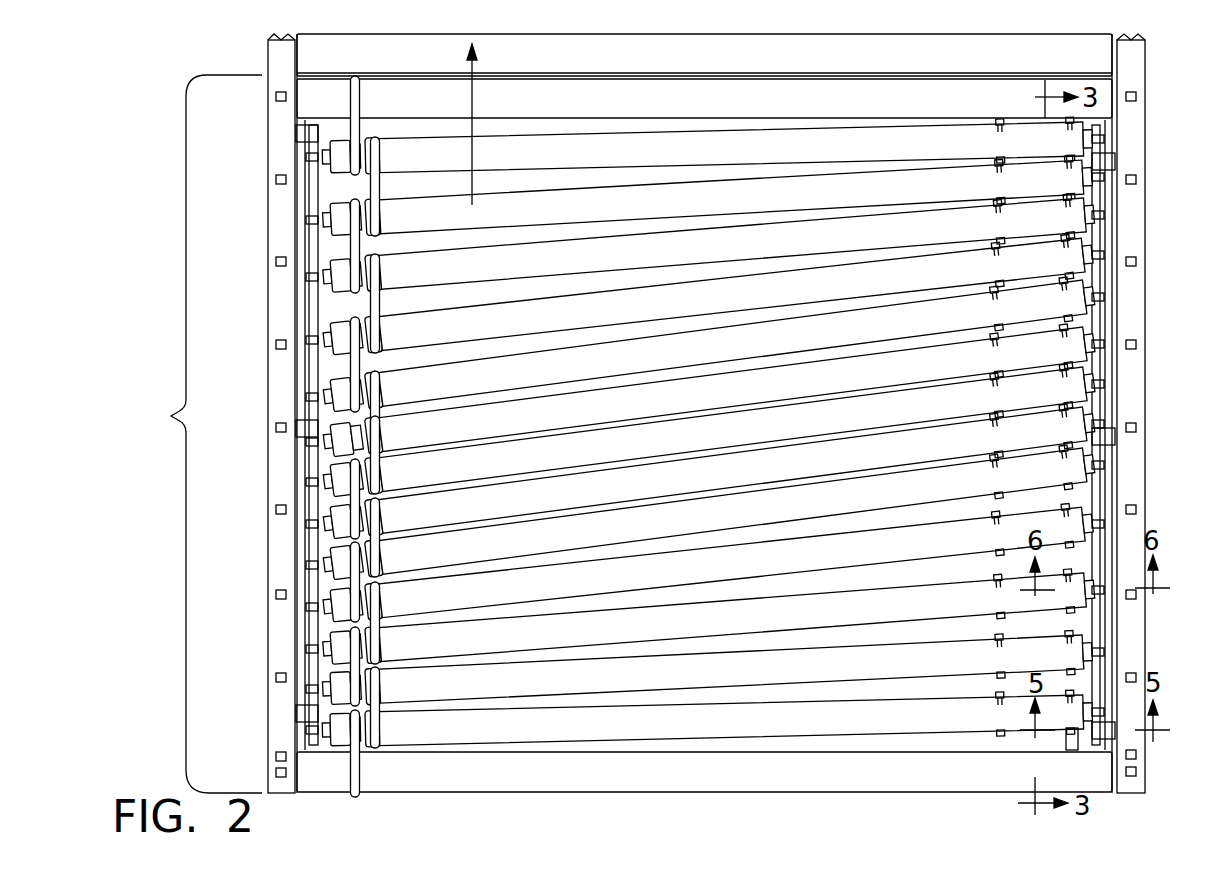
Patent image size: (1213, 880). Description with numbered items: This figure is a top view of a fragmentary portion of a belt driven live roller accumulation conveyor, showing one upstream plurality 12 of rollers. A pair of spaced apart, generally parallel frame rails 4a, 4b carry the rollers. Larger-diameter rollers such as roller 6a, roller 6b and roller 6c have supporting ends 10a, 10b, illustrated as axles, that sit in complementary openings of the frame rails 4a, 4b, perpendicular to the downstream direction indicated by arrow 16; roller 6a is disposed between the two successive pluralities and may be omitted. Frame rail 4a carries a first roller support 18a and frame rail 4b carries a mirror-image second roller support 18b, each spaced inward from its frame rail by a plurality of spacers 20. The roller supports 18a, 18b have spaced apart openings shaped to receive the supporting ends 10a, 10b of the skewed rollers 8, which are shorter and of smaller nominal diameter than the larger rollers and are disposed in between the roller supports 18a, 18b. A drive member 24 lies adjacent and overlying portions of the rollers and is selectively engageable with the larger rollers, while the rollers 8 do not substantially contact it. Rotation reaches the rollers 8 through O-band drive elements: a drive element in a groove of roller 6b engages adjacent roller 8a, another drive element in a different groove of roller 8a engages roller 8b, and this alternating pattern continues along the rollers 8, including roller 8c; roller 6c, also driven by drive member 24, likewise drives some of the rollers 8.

The frame rail 4a is at (276, 278).
The frame rail 4b is at (1138, 238).
The roller 6a is at (621, 67).
The roller 6b is at (621, 785).
The roller 6c is at (621, 108).
The roller 8 is at (625, 162).
The roller 8a is at (623, 732).
The roller 8b is at (623, 685).
The third roller 8c is at (623, 634).
The supporting end 10a is at (306, 158).
The supporting end 10b is at (1100, 218).
The upstream plurality 12 is at (194, 434).
The arrow 16 is at (478, 152).
The first roller support 18a is at (308, 540).
The second roller support 18b is at (1098, 492).
The spacer 20 is at (302, 134).
The drive member 24 is at (1075, 742).